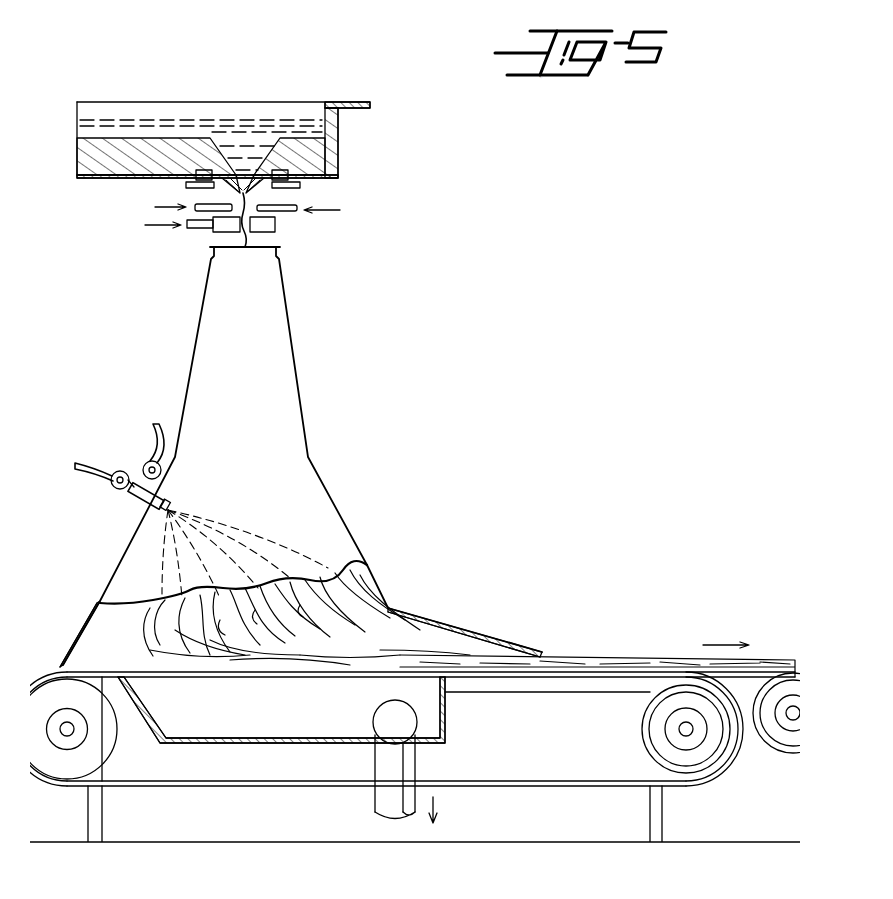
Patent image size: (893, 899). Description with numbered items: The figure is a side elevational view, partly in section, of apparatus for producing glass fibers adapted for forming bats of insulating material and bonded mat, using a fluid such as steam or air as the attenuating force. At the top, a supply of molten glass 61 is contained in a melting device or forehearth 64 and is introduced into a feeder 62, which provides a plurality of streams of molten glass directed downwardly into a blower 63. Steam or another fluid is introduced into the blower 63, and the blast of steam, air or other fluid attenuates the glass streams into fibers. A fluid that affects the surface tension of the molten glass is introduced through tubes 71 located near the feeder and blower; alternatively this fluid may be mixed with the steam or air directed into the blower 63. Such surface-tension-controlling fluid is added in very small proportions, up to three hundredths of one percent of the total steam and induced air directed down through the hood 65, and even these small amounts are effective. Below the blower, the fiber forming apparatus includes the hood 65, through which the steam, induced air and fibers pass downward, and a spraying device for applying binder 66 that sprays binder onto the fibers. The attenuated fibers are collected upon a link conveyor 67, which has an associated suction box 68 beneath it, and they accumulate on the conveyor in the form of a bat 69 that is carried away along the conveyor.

The molten glass 61 is at (177, 128).
The feeder 62 is at (275, 188).
The blower 63 is at (267, 225).
The forehearth 64 is at (110, 178).
The hood 65 is at (290, 403).
The spraying device for applying binder 66 is at (148, 503).
The link conveyor 67 is at (233, 782).
The suction box 68 is at (445, 722).
The bat 69 is at (593, 662).
The tubes 71 is at (208, 207).